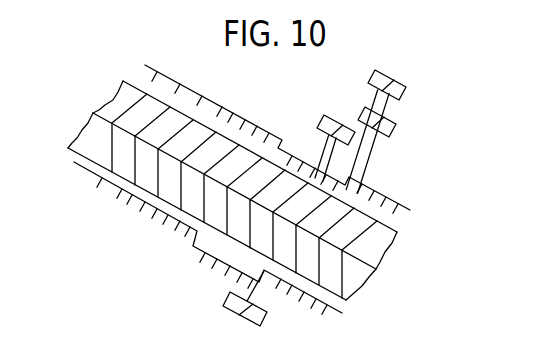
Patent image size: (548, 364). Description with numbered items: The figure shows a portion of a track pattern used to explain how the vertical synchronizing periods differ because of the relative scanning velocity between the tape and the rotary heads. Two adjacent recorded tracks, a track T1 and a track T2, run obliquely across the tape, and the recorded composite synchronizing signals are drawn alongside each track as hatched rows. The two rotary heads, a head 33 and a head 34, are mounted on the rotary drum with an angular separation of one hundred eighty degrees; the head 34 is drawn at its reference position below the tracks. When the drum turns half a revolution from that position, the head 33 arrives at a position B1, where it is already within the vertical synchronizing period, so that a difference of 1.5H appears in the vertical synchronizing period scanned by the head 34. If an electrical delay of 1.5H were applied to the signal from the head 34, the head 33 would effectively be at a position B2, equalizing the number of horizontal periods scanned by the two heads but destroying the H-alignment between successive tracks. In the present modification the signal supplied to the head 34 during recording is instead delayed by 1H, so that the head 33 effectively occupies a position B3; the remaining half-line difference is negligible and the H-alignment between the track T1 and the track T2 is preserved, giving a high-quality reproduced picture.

The track T1 is at (82, 137).
The track T2 is at (113, 99).
The position B1 is at (319, 112).
The position B2 is at (403, 126).
The position B3 is at (411, 80).
The head 33 is at (330, 117).
The head 34 is at (230, 296).
The delay of one horizontal scanning period 1H is at (340, 150).
The difference of one and a half horizontal scanning periods 1.5H is at (372, 165).